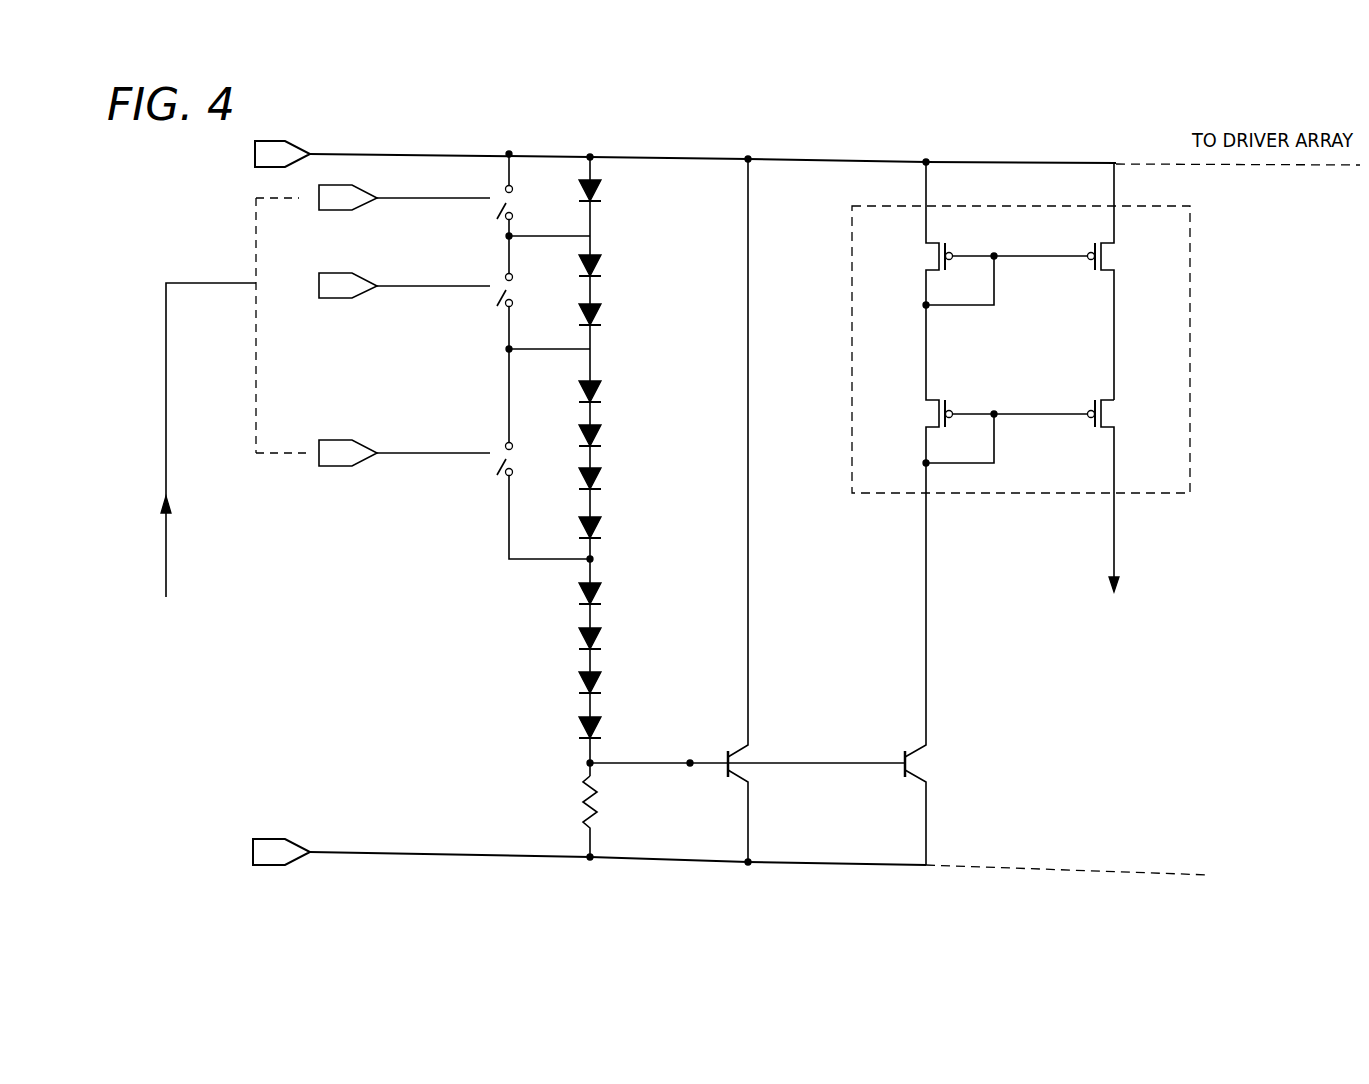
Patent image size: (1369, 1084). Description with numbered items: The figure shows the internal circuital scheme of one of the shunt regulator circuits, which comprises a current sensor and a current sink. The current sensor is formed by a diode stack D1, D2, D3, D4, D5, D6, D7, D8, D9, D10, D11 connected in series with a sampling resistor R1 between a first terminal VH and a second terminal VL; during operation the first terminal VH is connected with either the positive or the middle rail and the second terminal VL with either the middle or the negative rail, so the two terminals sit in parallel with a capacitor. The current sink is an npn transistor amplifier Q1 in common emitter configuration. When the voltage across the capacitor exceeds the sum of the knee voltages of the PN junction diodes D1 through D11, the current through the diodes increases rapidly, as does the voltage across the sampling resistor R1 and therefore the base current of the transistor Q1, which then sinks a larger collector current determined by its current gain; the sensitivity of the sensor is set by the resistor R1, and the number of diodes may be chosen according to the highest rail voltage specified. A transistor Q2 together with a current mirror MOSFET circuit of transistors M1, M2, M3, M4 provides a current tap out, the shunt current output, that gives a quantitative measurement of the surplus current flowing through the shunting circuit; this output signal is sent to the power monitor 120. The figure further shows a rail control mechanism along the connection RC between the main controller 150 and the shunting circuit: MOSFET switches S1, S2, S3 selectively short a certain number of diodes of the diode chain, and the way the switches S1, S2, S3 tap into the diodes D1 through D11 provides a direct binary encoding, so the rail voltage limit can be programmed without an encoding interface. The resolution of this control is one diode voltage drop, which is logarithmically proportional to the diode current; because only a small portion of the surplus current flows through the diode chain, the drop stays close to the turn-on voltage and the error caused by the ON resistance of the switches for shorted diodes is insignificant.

The first terminal VH is at (788, 154).
The second terminal VL is at (713, 857).
The MOSFET switch S1 is at (454, 197).
The MOSFET switch S2 is at (454, 294).
The MOSFET switch S3 is at (456, 455).
The diode D1 is at (608, 725).
The diode D2 is at (608, 680).
The diode D3 is at (608, 636).
The diode D4 is at (608, 591).
The diode D5 is at (608, 525).
The diode D6 is at (608, 476).
The diode D7 is at (608, 433).
The diode D8 is at (608, 389).
The diode D9 is at (608, 312).
The diode D10 is at (613, 263).
The diode D11 is at (613, 188).
The sampling resistor R1 is at (610, 816).
The npn transistor amplifier Q1 is at (762, 510).
The transistor Q2 is at (937, 664).
The current mirror MOSFET M1 is at (992, 235).
The current mirror MOSFET M2 is at (1121, 281).
The current mirror MOSFET M3 is at (992, 385).
The current mirror MOSFET M4 is at (1121, 440).
The connection RC is at (166, 530).
The main controller 150 is at (190, 639).
The power monitor 120 is at (1119, 572).